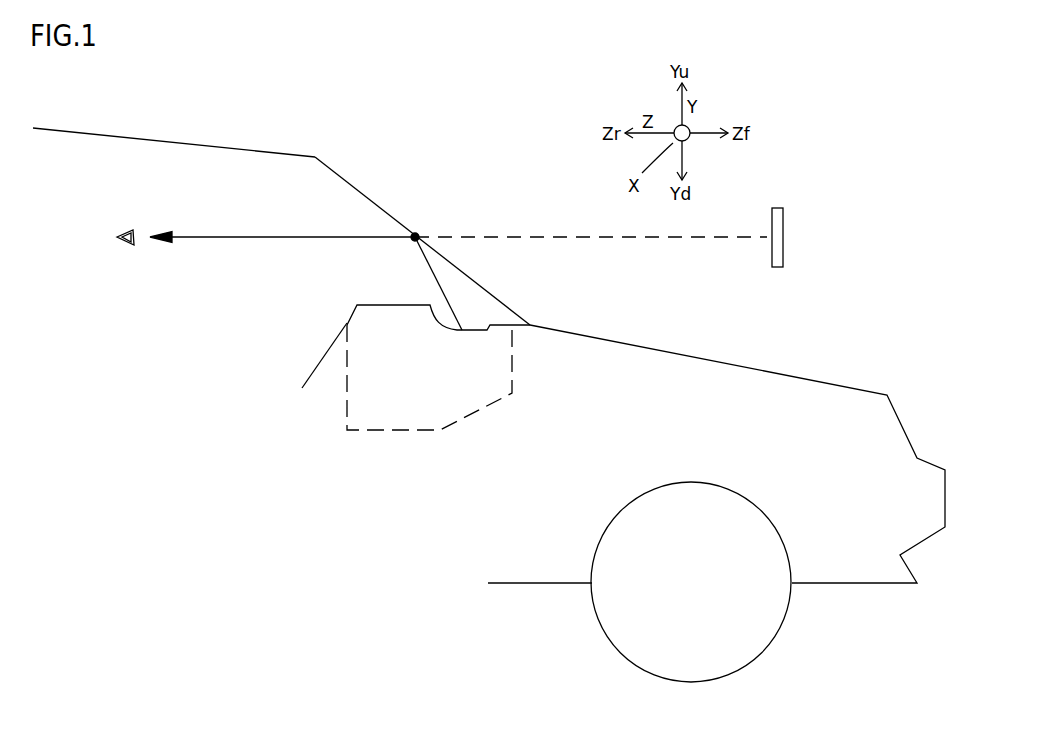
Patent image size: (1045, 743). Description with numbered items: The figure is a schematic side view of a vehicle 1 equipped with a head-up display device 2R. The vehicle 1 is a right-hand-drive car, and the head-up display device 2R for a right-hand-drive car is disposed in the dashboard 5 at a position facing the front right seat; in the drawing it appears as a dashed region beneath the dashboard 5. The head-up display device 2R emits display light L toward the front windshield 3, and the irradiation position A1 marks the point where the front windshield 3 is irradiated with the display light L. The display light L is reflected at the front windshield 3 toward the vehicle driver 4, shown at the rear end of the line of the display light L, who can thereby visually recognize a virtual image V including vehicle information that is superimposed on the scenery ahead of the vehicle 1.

The vehicle 1 is at (192, 135).
The front windshield 3 is at (368, 197).
The vehicle driver 4 is at (132, 231).
The dashboard 5 is at (343, 331).
The head-up display device 2R is at (427, 433).
The irradiation position A1 is at (419, 234).
The display light L is at (323, 236).
The virtual image V is at (778, 210).